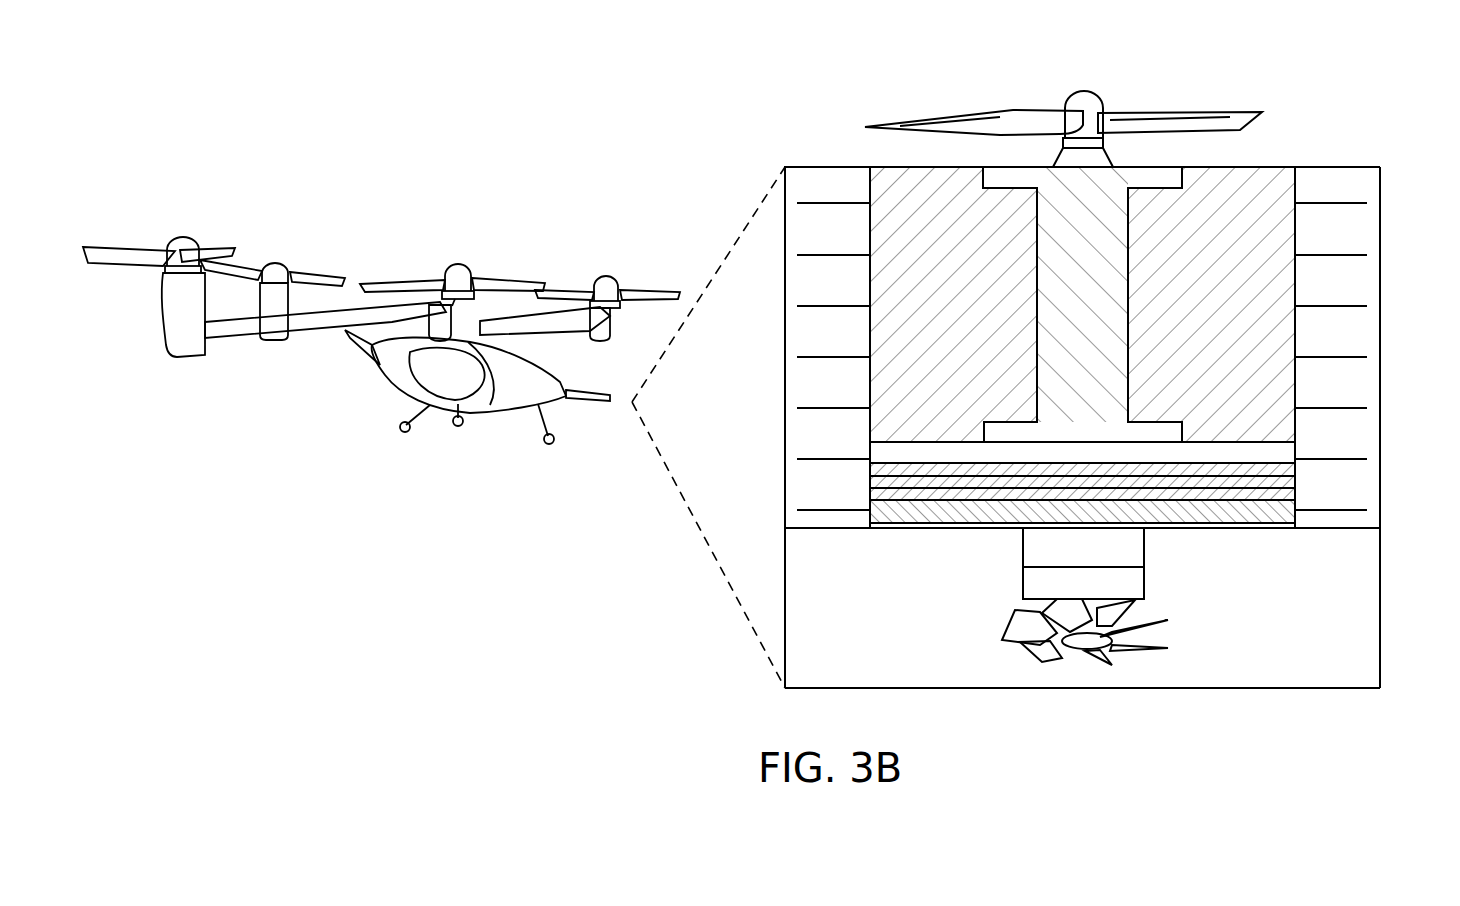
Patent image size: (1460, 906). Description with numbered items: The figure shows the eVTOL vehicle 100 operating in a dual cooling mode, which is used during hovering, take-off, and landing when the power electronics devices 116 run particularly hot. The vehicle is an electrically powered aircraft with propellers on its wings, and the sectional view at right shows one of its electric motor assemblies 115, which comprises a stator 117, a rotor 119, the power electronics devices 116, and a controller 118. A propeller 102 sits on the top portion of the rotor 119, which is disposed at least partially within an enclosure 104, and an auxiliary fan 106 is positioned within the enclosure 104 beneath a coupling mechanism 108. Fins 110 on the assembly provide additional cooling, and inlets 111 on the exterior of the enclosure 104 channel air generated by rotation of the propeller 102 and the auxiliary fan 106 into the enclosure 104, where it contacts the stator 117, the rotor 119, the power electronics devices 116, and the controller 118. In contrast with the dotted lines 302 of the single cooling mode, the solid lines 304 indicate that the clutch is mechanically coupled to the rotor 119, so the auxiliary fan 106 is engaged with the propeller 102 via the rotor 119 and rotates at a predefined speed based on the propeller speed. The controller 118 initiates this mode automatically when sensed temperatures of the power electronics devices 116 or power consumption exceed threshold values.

The eVTOL vehicle 100 is at (183, 190).
The propeller 102 is at (1083, 92).
The enclosure 104 is at (1381, 283).
The auxiliary fan 106 is at (1010, 640).
The coupling mechanism 108 is at (1144, 580).
The fins 110 is at (822, 203).
The inlets 111 is at (785, 240).
The electric motor assembly 115 is at (1275, 180).
The power electronics devices 116 is at (1298, 463).
The stator 117 is at (963, 311).
The controller 118 is at (1265, 518).
The rotor 119 is at (1105, 311).
The dotted lines 302 is at (1324, 131).
The solid lines 304 is at (1023, 545).